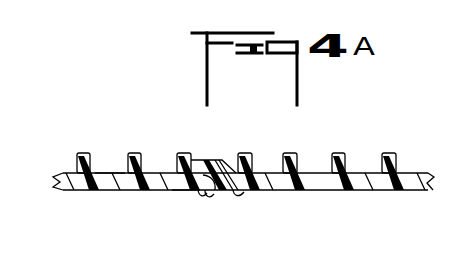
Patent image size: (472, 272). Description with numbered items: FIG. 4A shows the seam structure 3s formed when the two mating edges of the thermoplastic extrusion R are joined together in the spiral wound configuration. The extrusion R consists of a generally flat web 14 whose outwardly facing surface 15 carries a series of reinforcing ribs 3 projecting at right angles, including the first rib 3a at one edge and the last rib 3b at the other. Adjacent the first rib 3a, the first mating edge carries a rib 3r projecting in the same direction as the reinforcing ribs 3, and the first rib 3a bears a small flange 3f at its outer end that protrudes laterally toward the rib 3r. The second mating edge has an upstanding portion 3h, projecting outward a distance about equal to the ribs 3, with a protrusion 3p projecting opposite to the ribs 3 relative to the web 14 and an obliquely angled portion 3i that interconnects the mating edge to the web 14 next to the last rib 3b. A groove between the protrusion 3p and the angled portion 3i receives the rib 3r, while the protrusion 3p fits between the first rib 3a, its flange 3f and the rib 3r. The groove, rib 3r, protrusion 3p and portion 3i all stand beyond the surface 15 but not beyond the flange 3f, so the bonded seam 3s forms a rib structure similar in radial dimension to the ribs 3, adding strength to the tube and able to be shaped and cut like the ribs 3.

The reinforcing ribs 3 is at (83, 152).
The first reinforcing rib 3a is at (179, 153).
The last reinforcing rib 3b is at (246, 153).
The small flange 3f is at (189, 152).
The upstanding portion 3h is at (208, 160).
The obliquely angled portion 3i is at (248, 192).
The protrusion 3p is at (177, 191).
The rib 3r is at (213, 193).
The seam structure 3s is at (205, 196).
The web 14 is at (306, 176).
The outwardly facing surface 15 is at (108, 173).
The thermoplastic extrusion R is at (73, 173).